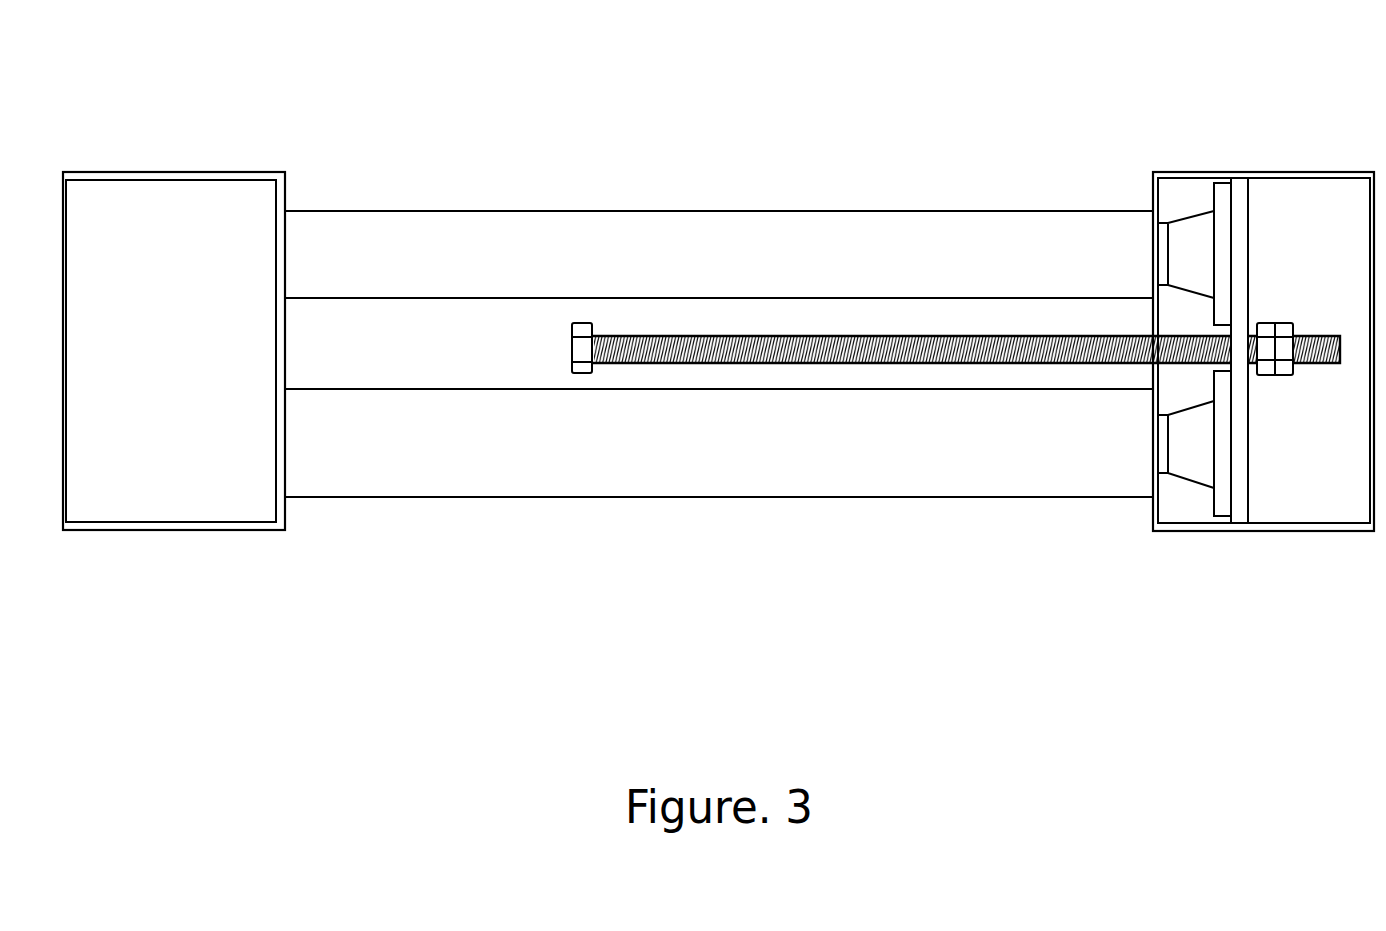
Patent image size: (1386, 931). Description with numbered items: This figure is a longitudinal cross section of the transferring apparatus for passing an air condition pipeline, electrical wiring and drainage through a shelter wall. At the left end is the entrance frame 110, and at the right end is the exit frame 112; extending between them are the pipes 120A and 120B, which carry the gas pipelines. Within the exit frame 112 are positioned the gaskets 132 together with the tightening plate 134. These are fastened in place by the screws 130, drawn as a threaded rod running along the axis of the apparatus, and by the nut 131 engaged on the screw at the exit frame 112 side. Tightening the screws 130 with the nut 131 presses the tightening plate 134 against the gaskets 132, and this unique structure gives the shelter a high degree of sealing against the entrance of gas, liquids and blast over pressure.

The entrance frame 110 is at (218, 168).
The exit frame 112 is at (1198, 531).
The pipe 120A is at (750, 210).
The pipe 120B is at (960, 498).
The screw 130 is at (700, 363).
The nut 131 is at (1285, 375).
The gaskets 132 is at (1190, 210).
The tightening plate 134 is at (1238, 177).